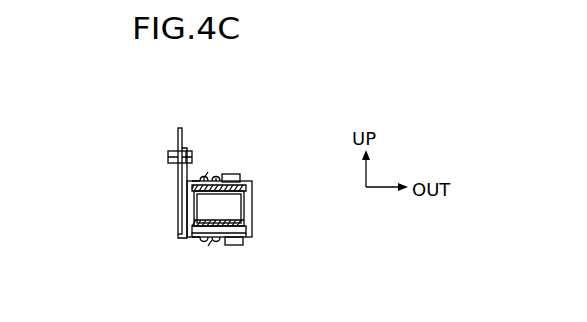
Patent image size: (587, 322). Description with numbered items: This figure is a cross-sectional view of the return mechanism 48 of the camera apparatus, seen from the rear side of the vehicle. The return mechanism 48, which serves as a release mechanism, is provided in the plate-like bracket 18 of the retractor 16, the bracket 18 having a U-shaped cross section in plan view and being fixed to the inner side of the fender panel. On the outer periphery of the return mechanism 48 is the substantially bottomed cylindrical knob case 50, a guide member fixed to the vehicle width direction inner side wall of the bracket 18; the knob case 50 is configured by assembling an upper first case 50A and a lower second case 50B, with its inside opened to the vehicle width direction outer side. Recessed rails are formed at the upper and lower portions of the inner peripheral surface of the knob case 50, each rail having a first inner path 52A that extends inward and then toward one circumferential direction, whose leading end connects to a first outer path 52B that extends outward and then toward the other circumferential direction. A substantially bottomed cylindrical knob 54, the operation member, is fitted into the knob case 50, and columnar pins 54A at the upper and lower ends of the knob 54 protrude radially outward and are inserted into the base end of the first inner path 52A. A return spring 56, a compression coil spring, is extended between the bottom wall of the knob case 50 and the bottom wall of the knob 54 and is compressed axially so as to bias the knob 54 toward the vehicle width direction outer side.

The retractor 16 is at (150, 103).
The bracket 18 is at (176, 166).
The return mechanism 48 is at (244, 170).
The knob case 50 is at (234, 240).
The first case 50A is at (252, 181).
The second case 50B is at (244, 240).
The first inner path 52A is at (200, 177).
The first outer path 52B is at (226, 177).
The knob 54 is at (250, 198).
The pin 54A is at (222, 178).
The return spring 56 is at (250, 225).